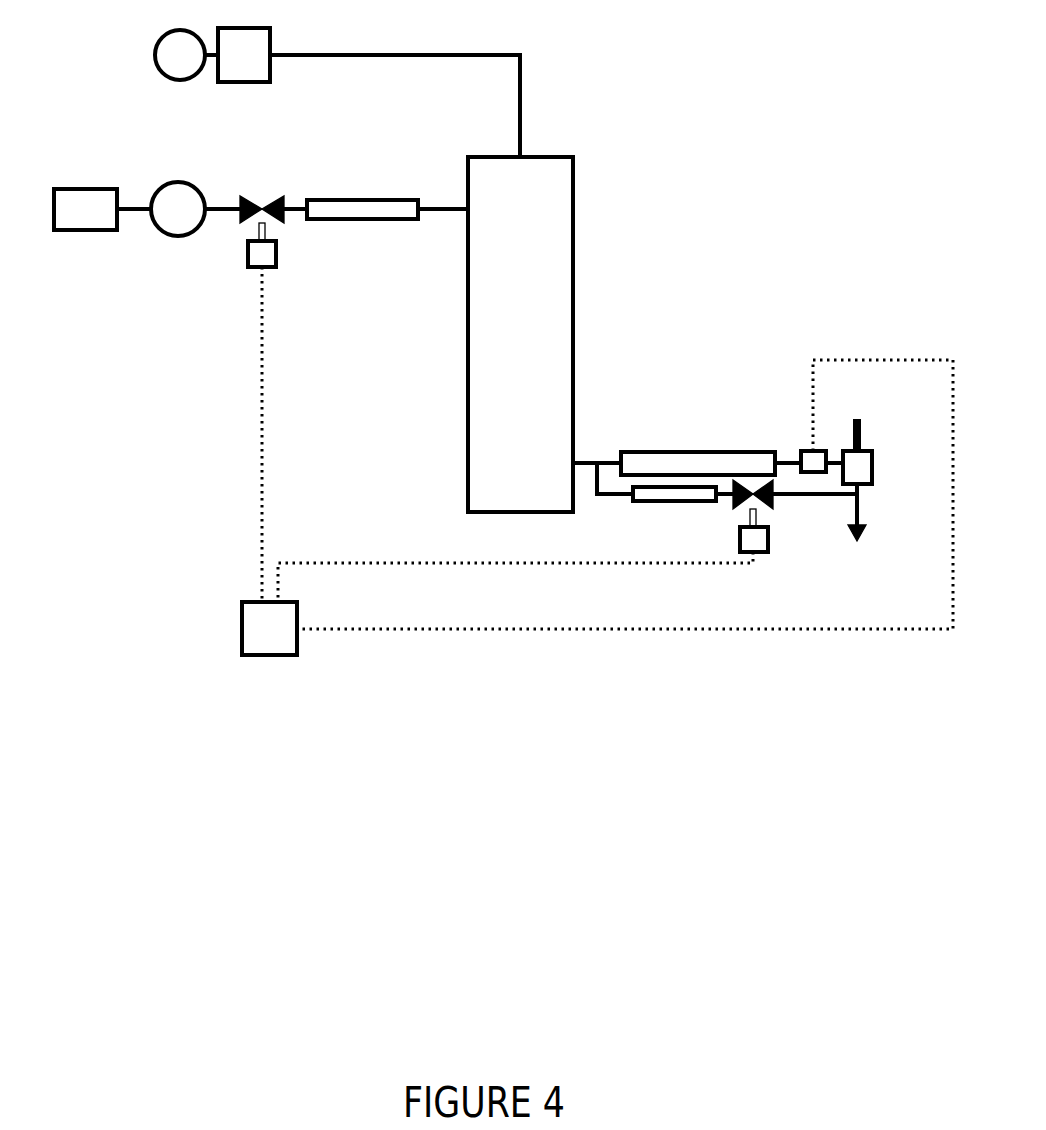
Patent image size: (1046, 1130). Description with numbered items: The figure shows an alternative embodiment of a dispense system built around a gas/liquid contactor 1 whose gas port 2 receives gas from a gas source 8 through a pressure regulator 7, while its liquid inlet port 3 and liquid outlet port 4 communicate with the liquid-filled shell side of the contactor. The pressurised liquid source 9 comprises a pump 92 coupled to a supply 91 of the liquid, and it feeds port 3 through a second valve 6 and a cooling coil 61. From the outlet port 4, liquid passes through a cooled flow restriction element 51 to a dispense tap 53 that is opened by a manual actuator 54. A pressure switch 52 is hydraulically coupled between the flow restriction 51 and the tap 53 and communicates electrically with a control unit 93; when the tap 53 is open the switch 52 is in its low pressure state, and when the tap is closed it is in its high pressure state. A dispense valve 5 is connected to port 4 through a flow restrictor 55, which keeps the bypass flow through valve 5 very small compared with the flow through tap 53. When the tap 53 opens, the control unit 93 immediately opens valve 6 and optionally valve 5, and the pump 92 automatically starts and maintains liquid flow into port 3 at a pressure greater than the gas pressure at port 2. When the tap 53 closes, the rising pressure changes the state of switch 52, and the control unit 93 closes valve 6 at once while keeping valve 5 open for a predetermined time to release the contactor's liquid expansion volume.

The gas/liquid contactor 1 is at (520, 334).
The gas port 2 is at (523, 152).
The liquid inlet port 3 is at (465, 213).
The liquid outlet port 4 is at (575, 462).
The dispense valve 5 is at (778, 508).
The second valve 6 is at (264, 175).
The pressure regulator 7 is at (258, 42).
The gas source 8 is at (190, 62).
The pressurised liquid source 9 is at (130, 234).
The cooled flow restriction element 51 is at (733, 462).
The pressure switch 52 is at (800, 447).
The dispense tap 53 is at (862, 465).
The manual actuator 54 is at (866, 438).
The flow restrictor 55 is at (711, 501).
The cooling coil 61 is at (387, 208).
The supply of the liquid 91 is at (105, 195).
The pump 92 is at (188, 195).
The control unit 93 is at (290, 650).